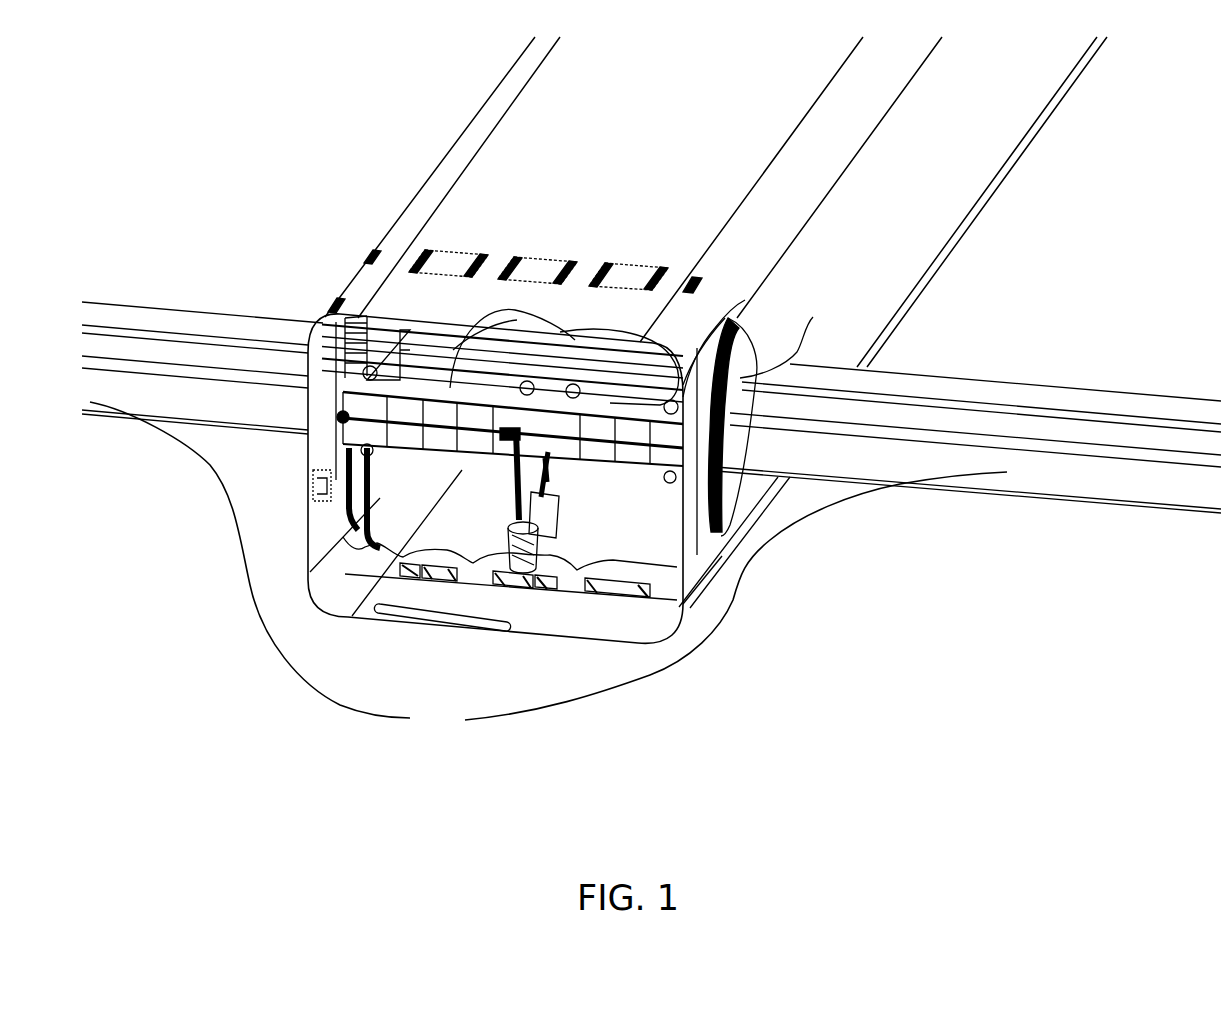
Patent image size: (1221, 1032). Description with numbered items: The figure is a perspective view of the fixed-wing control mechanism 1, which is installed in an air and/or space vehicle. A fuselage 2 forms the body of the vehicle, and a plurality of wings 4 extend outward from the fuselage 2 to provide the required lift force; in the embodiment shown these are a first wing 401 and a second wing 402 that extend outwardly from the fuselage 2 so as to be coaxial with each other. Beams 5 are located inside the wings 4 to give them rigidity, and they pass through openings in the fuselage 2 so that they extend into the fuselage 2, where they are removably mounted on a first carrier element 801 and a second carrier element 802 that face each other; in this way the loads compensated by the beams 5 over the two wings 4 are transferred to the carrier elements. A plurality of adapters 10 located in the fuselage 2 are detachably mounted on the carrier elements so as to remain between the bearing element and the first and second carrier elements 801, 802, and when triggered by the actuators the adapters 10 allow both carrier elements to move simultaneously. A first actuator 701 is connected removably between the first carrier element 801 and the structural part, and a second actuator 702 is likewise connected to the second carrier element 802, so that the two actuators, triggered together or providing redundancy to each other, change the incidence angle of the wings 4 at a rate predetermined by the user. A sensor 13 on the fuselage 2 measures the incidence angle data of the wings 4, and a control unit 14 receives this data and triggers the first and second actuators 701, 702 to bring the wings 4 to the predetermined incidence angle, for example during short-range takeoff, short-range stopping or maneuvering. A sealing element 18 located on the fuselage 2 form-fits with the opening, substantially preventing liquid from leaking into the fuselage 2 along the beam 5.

The fixed-wing control mechanism 1 is at (229, 151).
The fuselage 2 is at (443, 233).
The wing 4 is at (548, 565).
The beam 5 is at (567, 329).
The adapter 10 is at (380, 322).
The sensor 13 is at (467, 618).
The control unit 14 is at (318, 490).
The sealing element 18 is at (813, 317).
The first wing 401 is at (174, 318).
The second wing 402 is at (917, 383).
The first actuator 701 is at (507, 507).
The second actuator 702 is at (553, 483).
The first carrier element 801 is at (745, 300).
The second carrier element 802 is at (625, 360).